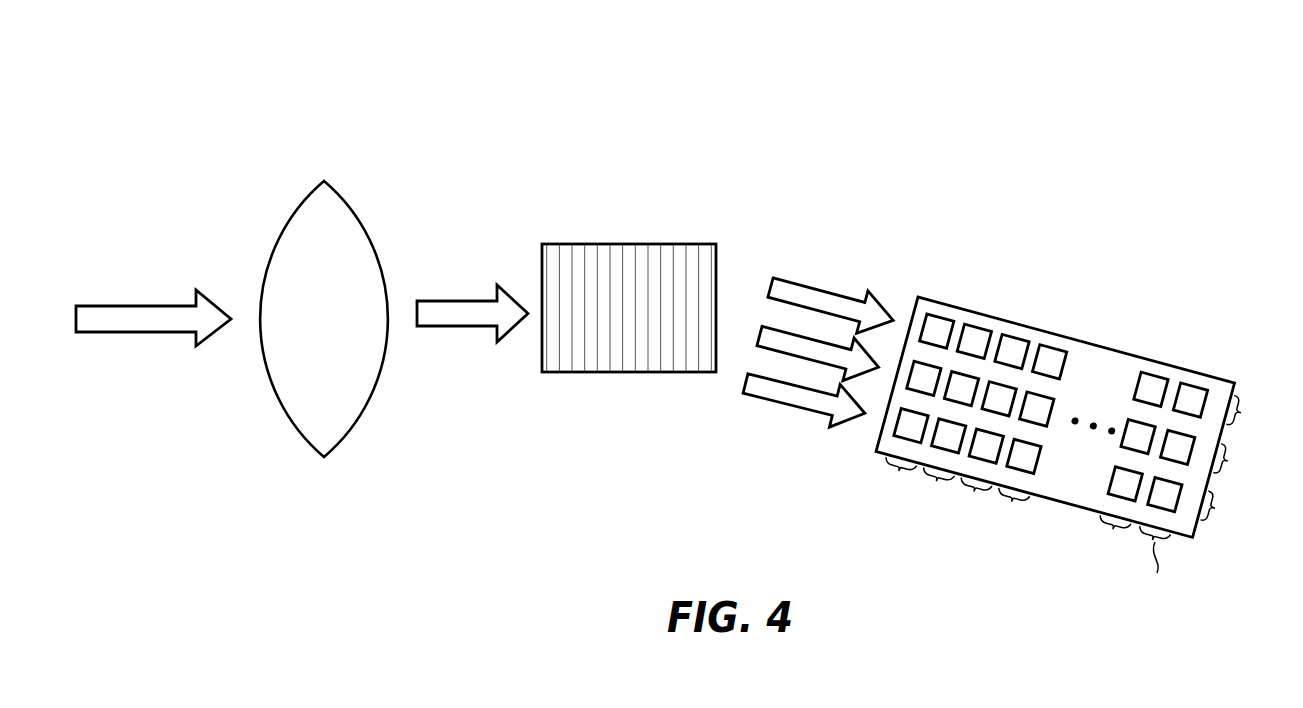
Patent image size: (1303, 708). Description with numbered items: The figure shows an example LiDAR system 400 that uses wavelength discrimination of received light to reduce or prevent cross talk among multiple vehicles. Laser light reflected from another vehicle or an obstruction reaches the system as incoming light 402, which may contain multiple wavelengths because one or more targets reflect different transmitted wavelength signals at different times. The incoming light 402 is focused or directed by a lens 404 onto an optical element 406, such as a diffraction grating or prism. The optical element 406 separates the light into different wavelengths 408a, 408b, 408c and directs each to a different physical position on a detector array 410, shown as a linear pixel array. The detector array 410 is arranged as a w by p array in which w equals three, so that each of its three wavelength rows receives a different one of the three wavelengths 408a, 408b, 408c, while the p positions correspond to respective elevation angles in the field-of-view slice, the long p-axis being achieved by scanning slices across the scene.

The LiDAR system 400 is at (455, 122).
The incoming light 402 is at (137, 305).
The lens 404 is at (287, 223).
The optical element 406 is at (591, 242).
The first wavelength light 408a is at (845, 292).
The second wavelength light 408b is at (779, 328).
The third wavelength light 408c is at (765, 400).
The detector array 410 is at (1112, 346).